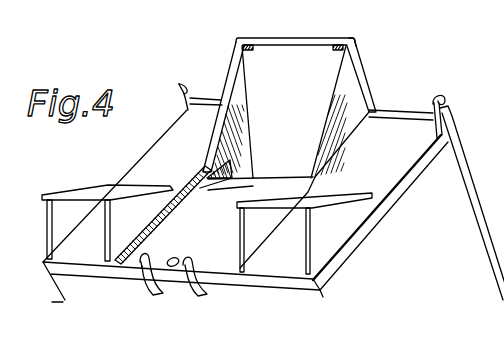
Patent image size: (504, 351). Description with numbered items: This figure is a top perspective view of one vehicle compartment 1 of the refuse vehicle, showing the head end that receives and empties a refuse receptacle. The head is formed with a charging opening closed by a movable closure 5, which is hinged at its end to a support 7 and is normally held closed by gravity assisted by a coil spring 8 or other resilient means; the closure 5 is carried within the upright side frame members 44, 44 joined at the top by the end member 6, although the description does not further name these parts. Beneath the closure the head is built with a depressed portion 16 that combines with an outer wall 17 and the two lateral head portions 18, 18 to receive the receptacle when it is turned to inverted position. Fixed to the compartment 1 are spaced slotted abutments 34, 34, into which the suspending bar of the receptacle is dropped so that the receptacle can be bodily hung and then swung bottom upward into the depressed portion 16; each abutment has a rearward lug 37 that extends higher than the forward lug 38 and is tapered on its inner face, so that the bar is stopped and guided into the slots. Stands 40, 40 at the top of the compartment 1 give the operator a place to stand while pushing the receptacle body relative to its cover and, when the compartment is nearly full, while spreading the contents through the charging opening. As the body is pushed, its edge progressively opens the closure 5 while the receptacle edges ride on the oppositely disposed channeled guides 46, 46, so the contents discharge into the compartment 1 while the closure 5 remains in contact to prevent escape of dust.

The vehicle compartment 1 is at (424, 279).
The movable closure 5 is at (288, 112).
The top rail end 6 is at (357, 45).
The support 7 is at (307, 38).
The coil spring 8 is at (249, 44).
The depressed portion 16 is at (184, 215).
The outer wall 17 is at (212, 267).
The lateral head portions 18 is at (178, 237).
The slotted abutments 34 is at (178, 284).
The rearward lugs 37 is at (147, 257).
The forward lugs 38 is at (139, 277).
The stands 40 is at (88, 187).
The side frame member 44 is at (230, 68).
The channeled guides 46 is at (227, 158).